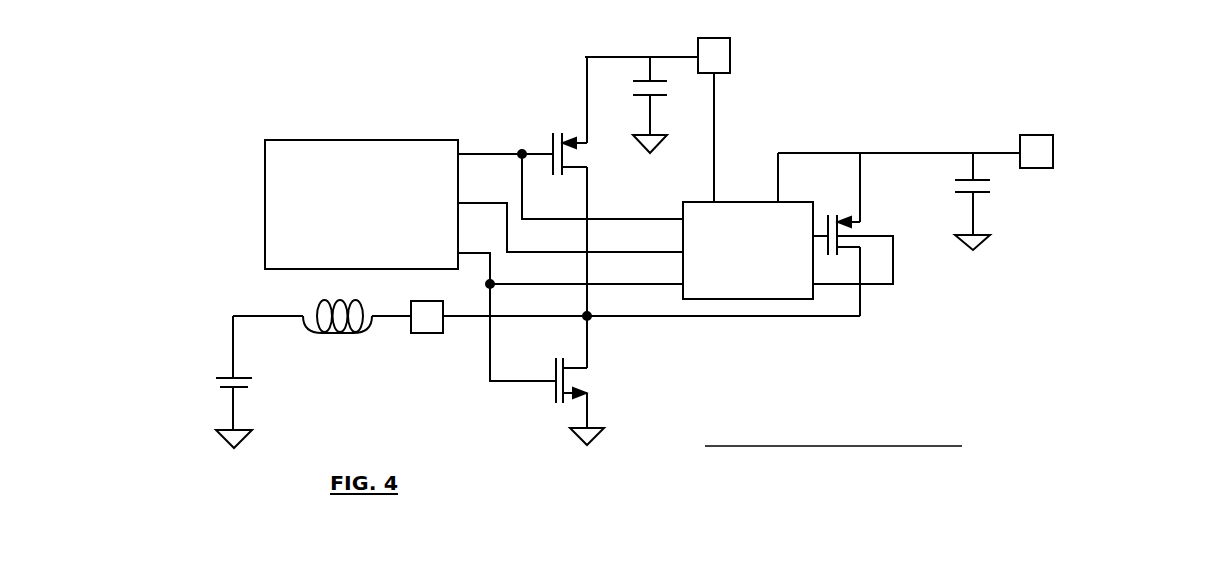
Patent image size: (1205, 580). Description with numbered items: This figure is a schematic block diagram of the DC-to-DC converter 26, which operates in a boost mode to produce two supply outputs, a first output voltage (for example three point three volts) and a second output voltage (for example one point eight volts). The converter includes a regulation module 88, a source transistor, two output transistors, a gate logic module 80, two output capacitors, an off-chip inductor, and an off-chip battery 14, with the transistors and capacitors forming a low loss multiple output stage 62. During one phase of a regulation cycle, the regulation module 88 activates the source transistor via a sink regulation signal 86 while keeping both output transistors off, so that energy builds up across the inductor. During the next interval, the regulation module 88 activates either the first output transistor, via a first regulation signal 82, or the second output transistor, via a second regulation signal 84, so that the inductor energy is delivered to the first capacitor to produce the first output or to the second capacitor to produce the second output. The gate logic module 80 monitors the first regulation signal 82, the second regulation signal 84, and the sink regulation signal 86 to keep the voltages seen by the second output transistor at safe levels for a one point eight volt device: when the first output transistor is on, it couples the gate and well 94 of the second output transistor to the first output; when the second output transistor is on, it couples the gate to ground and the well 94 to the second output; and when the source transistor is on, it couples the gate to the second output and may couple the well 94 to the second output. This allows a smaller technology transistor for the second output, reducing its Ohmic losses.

The battery 14 is at (179, 382).
The DC-to-DC converter 26 is at (478, 521).
The low loss multiple output stage 62 is at (882, 360).
The gate logic module 80 is at (748, 250).
The first regulation signal 82 is at (539, 144).
The second regulation signal 84 is at (507, 197).
The sink regulation signal 86 is at (524, 388).
The regulation module 88 is at (361, 204).
The well 94 is at (897, 285).